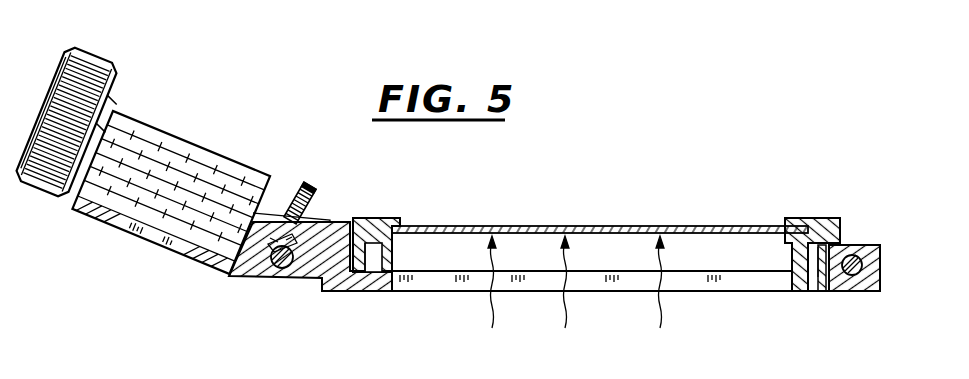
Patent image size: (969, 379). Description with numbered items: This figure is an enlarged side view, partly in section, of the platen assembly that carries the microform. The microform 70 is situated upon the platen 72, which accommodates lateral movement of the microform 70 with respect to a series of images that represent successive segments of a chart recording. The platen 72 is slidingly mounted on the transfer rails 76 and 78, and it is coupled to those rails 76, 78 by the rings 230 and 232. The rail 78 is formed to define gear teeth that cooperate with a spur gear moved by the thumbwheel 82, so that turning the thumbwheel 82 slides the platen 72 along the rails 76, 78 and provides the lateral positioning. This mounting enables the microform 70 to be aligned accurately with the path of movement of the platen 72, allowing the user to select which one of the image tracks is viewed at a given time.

The thumbwheel 82 is at (97, 52).
The transfer rail 78 is at (280, 270).
The platen 72 is at (386, 218).
The microform 70 is at (718, 202).
The ring 230 is at (395, 258).
The ring 232 is at (366, 262).
The transfer rail 76 is at (850, 278).